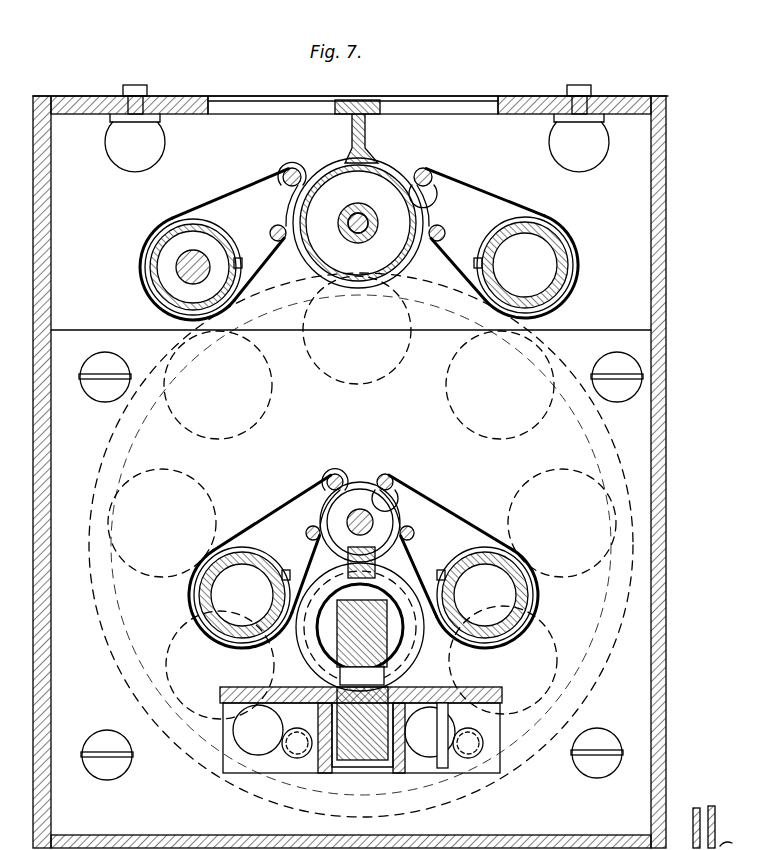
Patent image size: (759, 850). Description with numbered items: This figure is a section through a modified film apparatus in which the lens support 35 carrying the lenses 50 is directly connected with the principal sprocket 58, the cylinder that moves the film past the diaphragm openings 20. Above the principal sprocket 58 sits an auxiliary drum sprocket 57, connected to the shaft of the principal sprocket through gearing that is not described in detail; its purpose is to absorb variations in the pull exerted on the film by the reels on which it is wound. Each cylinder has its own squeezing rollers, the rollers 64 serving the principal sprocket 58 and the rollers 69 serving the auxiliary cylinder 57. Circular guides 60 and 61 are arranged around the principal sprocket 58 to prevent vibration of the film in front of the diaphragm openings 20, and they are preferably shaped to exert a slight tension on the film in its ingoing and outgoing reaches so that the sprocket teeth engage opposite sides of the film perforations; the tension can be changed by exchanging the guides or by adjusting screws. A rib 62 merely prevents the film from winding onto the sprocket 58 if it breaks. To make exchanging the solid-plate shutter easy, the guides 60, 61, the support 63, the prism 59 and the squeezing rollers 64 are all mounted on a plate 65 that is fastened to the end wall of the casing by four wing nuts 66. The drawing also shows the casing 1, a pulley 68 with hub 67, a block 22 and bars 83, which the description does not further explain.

The casing 1 is at (663, 245).
The auxiliary drum sprocket 57 is at (388, 170).
The pulley wheel 68 is at (170, 242).
The squeezing rollers 69 is at (287, 187).
The hub 67 is at (182, 278).
The plate 65 is at (572, 334).
The wing nuts 66 is at (101, 381).
The lenses 50 is at (576, 577).
The lens support 35 is at (598, 650).
The principal sprocket 58 is at (362, 512).
The squeezing rollers 64 is at (310, 527).
The rib 62 is at (373, 568).
The circular guide 61 is at (307, 637).
The circular guide 60 is at (413, 640).
The slide block 22 is at (343, 617).
The prism 59 is at (357, 757).
The diaphragm openings 20 is at (315, 760).
The support 63 is at (398, 745).
The bars 83 is at (712, 813).